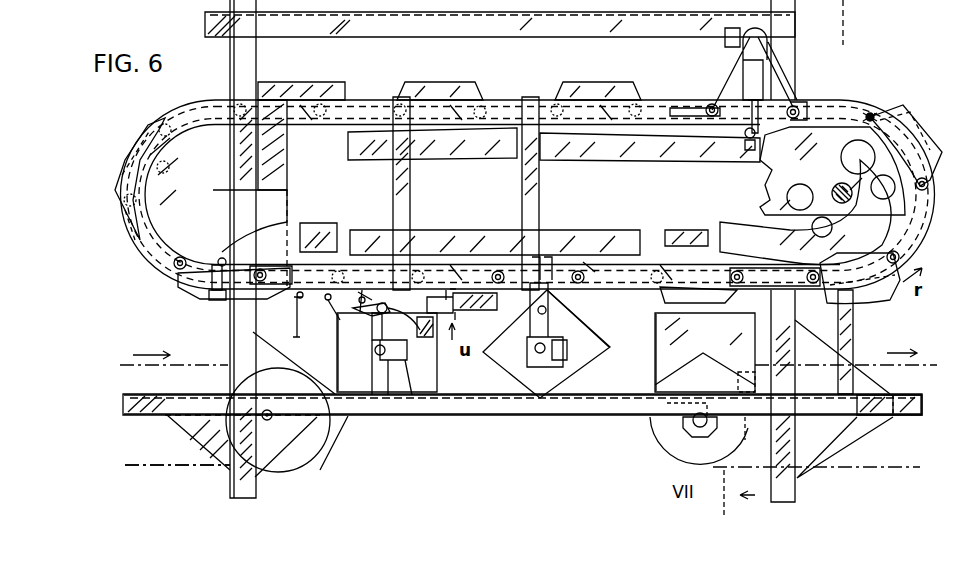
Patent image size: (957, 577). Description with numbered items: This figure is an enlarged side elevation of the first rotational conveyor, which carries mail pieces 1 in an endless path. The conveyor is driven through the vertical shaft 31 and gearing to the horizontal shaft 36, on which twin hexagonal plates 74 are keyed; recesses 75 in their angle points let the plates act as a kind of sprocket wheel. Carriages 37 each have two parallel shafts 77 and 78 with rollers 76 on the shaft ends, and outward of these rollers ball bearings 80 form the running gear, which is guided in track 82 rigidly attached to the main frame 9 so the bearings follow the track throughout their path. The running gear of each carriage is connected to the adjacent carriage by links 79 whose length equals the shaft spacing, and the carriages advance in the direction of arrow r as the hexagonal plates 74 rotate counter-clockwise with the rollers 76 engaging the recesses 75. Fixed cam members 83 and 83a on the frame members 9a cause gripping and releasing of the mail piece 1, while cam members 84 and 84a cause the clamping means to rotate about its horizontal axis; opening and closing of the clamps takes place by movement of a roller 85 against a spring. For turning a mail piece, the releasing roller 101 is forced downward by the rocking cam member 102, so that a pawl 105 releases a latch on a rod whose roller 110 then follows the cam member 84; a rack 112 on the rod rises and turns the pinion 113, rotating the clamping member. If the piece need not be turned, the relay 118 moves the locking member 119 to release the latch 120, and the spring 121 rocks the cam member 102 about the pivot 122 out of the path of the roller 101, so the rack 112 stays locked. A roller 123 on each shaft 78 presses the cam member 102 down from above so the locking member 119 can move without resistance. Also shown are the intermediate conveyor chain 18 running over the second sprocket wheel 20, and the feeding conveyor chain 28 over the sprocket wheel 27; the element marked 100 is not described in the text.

The mail piece 1 is at (655, 320).
The main frame 9 is at (500, 416).
The frame members 9a is at (393, 182).
The chain 18 is at (883, 467).
The second sprocket wheel 20 is at (655, 436).
The sprocket wheel 27 is at (294, 450).
The chain 28 is at (143, 464).
The vertical shaft 31 is at (853, 316).
The horizontal shaft 36 is at (837, 186).
The carriages 37 is at (573, 83).
The hexagonal plates 74 is at (772, 190).
The recesses 75 is at (772, 212).
The rollers 76 is at (870, 113).
The shaft 77 is at (797, 106).
The shaft 78 is at (710, 104).
The links 79 is at (797, 115).
The ball bearings 80 is at (712, 122).
The track 82 is at (742, 116).
The cam member 83 is at (317, 226).
The cam member 83a is at (722, 231).
The cam member 84 is at (553, 232).
The cam member 84a is at (475, 156).
The roller 85 is at (748, 148).
The holder 100 is at (413, 372).
The releasing roller 101 is at (390, 310).
The rocking cam member 102 is at (361, 290).
The pawl 105 is at (375, 345).
The roller 110 is at (752, 138).
The rack 112 is at (372, 362).
The pinion 113 is at (388, 362).
The relay 118 is at (485, 311).
The locking member 119 is at (448, 290).
The latch 120 is at (462, 313).
The spring 121 is at (297, 312).
The pivot 122 is at (328, 302).
The roller 123 is at (432, 231).